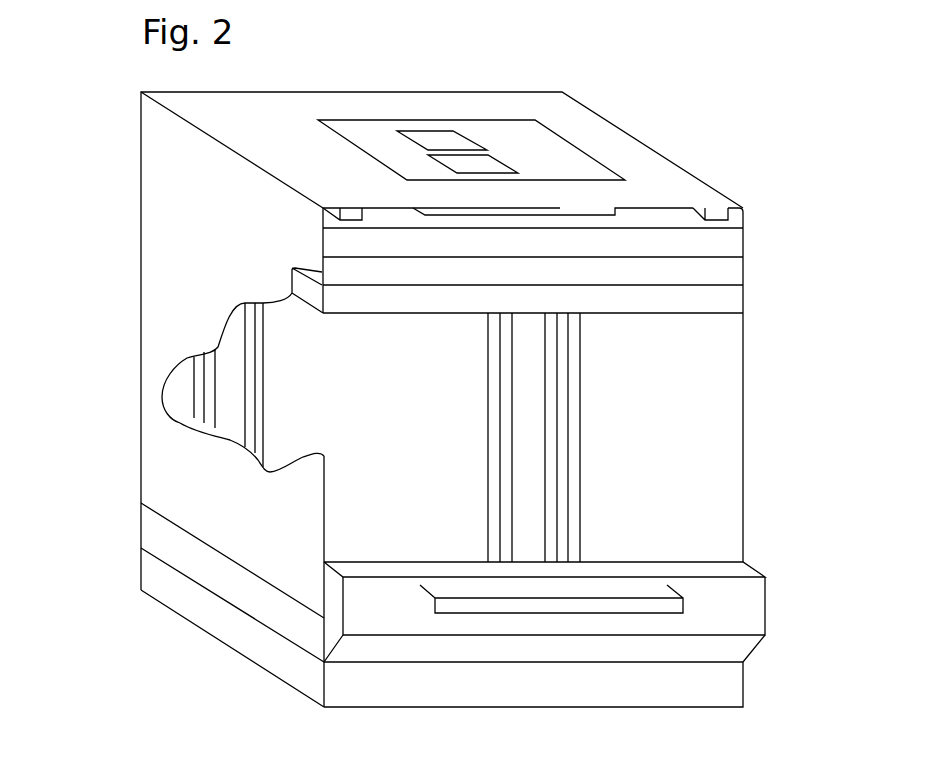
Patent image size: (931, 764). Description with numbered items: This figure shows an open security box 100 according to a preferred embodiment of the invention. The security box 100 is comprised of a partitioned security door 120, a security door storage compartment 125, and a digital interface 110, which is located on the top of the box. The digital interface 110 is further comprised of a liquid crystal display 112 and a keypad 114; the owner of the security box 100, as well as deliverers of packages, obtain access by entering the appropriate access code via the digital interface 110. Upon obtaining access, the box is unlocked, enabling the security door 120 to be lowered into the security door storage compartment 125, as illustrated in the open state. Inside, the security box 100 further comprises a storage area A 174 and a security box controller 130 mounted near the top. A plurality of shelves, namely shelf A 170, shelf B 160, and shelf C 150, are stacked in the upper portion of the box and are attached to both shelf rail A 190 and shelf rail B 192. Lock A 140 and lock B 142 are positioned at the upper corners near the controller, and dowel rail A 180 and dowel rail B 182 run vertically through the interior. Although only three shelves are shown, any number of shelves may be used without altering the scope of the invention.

The security box 100 is at (137, 168).
The digital interface 110 is at (469, 108).
The liquid crystal display (LCD) 112 is at (465, 145).
The keypad 114 is at (503, 162).
The partitioned security door 120 is at (750, 603).
The security door storage compartment 125 is at (248, 595).
The security box controller 130 is at (612, 208).
The lock A 140 is at (343, 207).
The lock B 142 is at (717, 208).
The shelf C 150 is at (725, 248).
The shelf B 160 is at (725, 273).
The shelf A 170 is at (728, 293).
The storage area A 174 is at (446, 503).
The dowel rail A 180 is at (202, 380).
The dowel rail B 182 is at (577, 407).
The shelf rail A 190 is at (260, 398).
The shelf rail B 192 is at (512, 483).